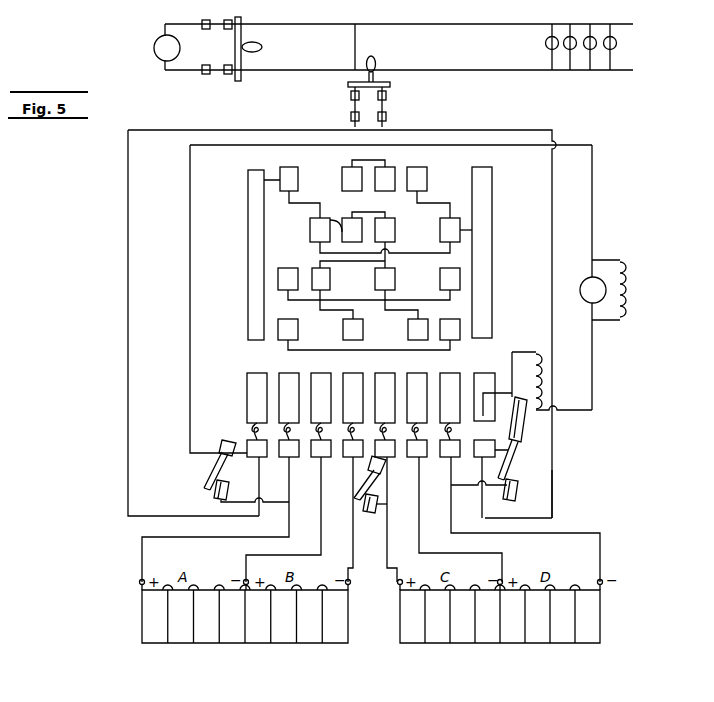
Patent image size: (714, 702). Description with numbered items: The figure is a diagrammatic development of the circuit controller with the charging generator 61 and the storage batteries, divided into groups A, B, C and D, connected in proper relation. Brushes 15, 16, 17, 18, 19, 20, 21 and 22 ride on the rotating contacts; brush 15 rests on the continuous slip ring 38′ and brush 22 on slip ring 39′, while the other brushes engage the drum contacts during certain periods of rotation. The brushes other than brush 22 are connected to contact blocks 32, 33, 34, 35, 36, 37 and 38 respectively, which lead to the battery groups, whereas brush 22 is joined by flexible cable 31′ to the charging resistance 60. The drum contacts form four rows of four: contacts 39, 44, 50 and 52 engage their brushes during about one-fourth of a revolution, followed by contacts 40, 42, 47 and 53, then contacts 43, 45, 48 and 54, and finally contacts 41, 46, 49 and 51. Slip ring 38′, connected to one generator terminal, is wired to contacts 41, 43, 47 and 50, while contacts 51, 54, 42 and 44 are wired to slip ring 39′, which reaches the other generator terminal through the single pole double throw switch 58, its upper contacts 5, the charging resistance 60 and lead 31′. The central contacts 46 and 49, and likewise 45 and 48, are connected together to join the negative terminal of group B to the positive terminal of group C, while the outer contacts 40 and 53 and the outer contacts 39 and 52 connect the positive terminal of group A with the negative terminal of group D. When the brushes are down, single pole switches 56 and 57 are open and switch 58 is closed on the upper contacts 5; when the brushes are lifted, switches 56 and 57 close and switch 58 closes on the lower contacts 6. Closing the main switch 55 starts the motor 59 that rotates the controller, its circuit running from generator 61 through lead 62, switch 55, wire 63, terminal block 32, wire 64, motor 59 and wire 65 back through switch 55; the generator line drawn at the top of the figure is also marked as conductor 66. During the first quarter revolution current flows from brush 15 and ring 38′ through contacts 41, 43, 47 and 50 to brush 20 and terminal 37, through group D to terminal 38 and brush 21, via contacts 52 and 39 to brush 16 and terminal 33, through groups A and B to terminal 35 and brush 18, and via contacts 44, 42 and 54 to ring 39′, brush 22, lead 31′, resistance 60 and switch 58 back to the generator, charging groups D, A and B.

The upper contacts 5 is at (518, 397).
The lower contacts 6 is at (518, 491).
The brush 15 is at (257, 406).
The brush 16 is at (289, 406).
The brush 17 is at (321, 406).
The brush 18 is at (353, 406).
The brush 19 is at (385, 406).
The brush 20 is at (417, 406).
The brush 21 is at (450, 406).
The brush 22 is at (493, 397).
The flexible cable 31′ is at (513, 352).
The contact block 32 is at (253, 460).
The contact block 33 is at (286, 460).
The contact block 34 is at (318, 460).
The contact block 35 is at (350, 460).
The contact block 36 is at (392, 460).
The contact block 37 is at (421, 460).
The contact block 38 is at (454, 460).
The continuous ring conductor 38′ is at (248, 243).
The contact 39 is at (285, 342).
The slip ring 39′ is at (492, 215).
The contact 40 is at (286, 291).
The contact 41 is at (289, 171).
The contact 42 is at (317, 270).
The contact 43 is at (310, 221).
The contact 44 is at (343, 333).
The contact 45 is at (344, 222).
The contact 46 is at (342, 178).
The contact 47 is at (375, 272).
The contact 48 is at (395, 231).
The contact 49 is at (389, 175).
The contact 50 is at (408, 328).
The contact 51 is at (425, 177).
The contact 52 is at (453, 343).
The contact 53 is at (440, 279).
The contact 54 is at (452, 217).
The main switch 55 is at (385, 103).
The single pole switch 56 is at (204, 474).
The single pole switch 57 is at (364, 512).
The single pole double throw switch 58 is at (524, 441).
The motor 59 is at (603, 277).
The charging resistance 60 is at (543, 379).
The charging generator 61 is at (162, 50).
The lead 62 is at (354, 47).
The wire 63 is at (128, 221).
The wire 64 is at (190, 421).
The wire 65 is at (553, 462).
The lamp circuit 66 is at (481, 72).